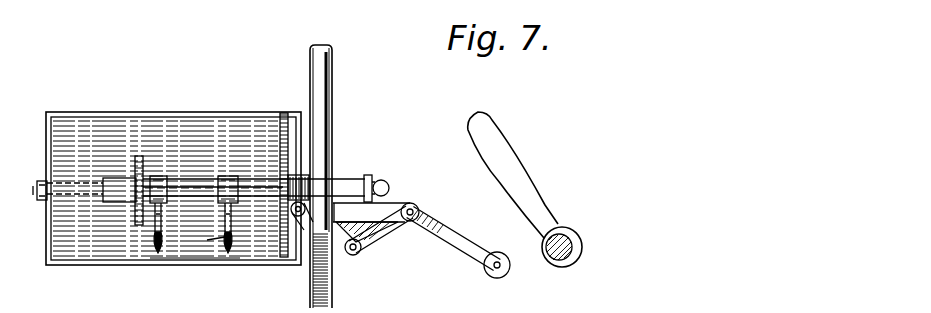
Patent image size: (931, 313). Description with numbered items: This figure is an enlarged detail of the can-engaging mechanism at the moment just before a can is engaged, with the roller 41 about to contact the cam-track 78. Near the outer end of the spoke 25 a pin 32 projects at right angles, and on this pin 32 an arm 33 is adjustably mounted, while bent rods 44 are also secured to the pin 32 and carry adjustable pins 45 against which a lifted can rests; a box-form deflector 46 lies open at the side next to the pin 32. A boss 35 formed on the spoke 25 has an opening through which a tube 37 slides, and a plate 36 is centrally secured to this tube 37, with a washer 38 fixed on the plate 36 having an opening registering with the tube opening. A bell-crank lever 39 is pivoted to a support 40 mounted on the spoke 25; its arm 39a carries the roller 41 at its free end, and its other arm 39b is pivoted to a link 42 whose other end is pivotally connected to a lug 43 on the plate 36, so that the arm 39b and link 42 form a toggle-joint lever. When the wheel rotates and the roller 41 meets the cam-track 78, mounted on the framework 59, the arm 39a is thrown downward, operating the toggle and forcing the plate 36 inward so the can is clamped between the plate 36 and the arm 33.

The spoke 25 is at (332, 88).
The pin 32 is at (68, 187).
The arm 33 is at (143, 166).
The boss 35 is at (289, 178).
The plate 36 is at (280, 152).
The tube 37 is at (370, 176).
The washer 38 is at (287, 172).
The bell-crank lever 39 is at (432, 211).
The arm of the bell-crank lever 39a is at (452, 234).
The arm of the bell-crank lever 39b is at (379, 239).
The support 40 is at (387, 213).
The roller 41 is at (493, 272).
The link 42 is at (303, 258).
The lug 43 is at (166, 247).
The rods 44 is at (161, 215).
The pins 45 is at (161, 224).
The deflector 46 is at (185, 260).
The framework 59 is at (556, 256).
The cam-track 78 is at (522, 168).